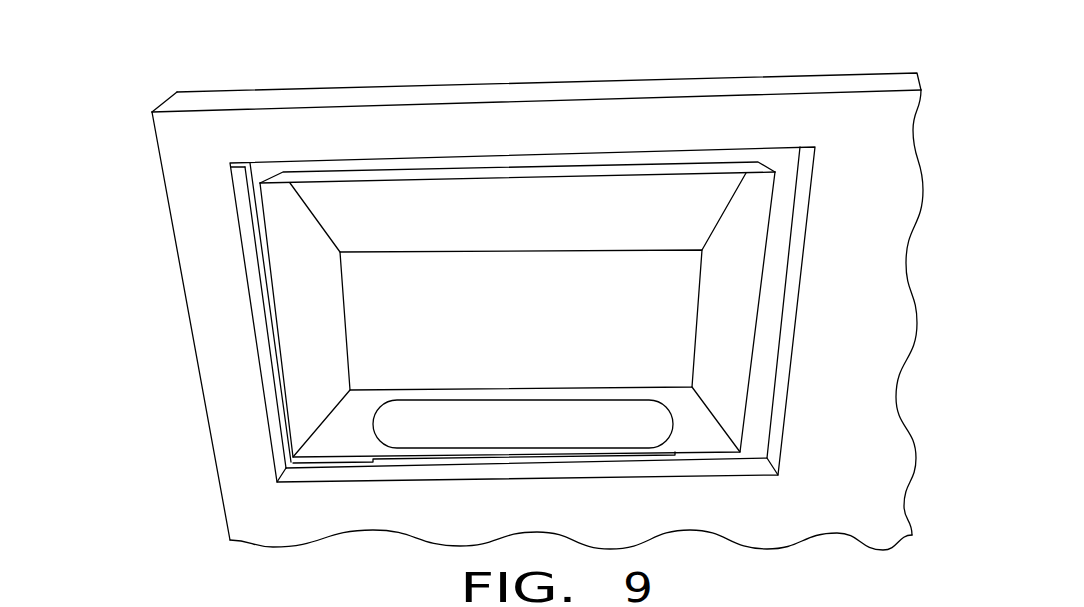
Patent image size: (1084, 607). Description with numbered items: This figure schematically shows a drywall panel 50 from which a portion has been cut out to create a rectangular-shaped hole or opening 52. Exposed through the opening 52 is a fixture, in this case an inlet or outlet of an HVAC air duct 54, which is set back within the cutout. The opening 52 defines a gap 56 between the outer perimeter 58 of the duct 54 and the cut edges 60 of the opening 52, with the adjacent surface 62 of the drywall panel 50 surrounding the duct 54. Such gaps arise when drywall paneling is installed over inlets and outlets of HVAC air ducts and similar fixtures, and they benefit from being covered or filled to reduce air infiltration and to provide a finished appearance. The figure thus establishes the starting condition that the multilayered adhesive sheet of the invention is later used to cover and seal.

The drywall panel 50 is at (172, 97).
The opening 52 is at (785, 162).
The air duct 54 is at (550, 321).
The gap 56 is at (347, 165).
The outer perimeter 58 is at (273, 300).
The edges 60 is at (234, 167).
The adjacent surface 62 is at (440, 113).